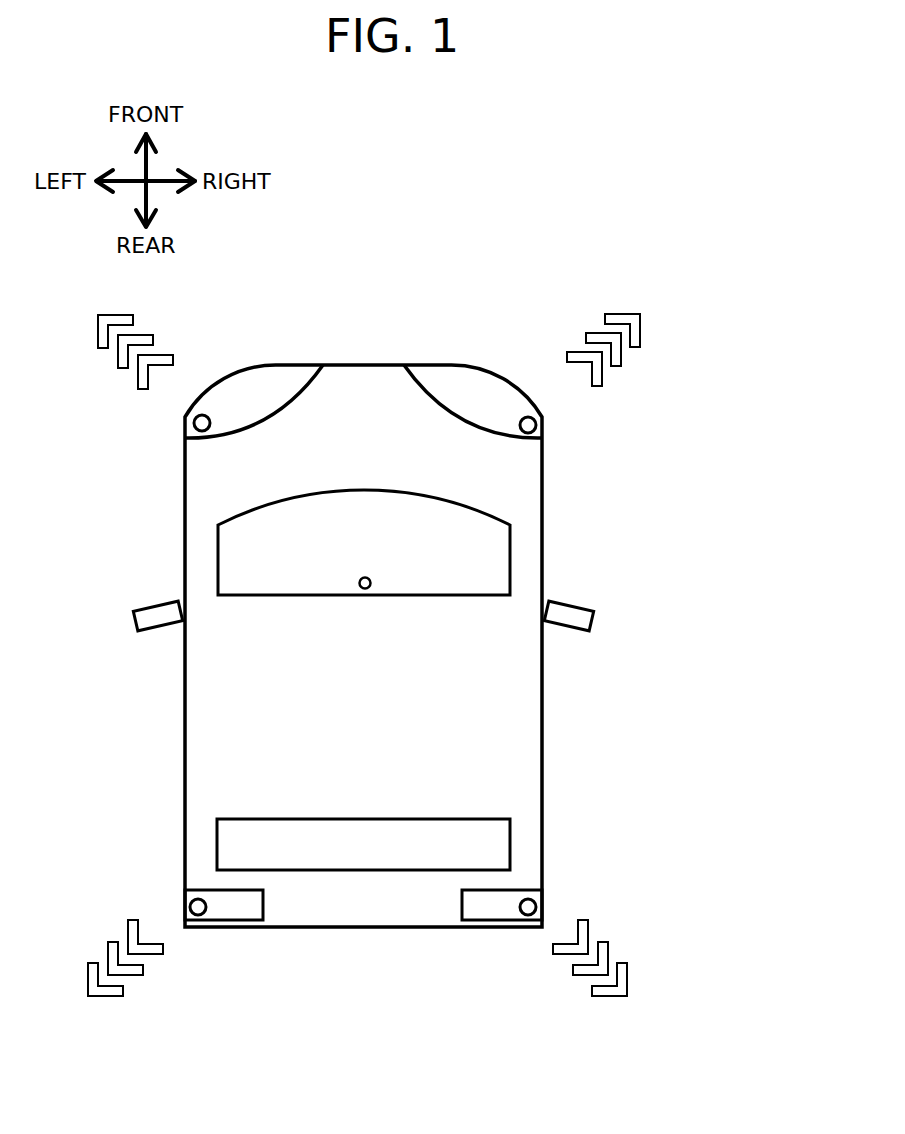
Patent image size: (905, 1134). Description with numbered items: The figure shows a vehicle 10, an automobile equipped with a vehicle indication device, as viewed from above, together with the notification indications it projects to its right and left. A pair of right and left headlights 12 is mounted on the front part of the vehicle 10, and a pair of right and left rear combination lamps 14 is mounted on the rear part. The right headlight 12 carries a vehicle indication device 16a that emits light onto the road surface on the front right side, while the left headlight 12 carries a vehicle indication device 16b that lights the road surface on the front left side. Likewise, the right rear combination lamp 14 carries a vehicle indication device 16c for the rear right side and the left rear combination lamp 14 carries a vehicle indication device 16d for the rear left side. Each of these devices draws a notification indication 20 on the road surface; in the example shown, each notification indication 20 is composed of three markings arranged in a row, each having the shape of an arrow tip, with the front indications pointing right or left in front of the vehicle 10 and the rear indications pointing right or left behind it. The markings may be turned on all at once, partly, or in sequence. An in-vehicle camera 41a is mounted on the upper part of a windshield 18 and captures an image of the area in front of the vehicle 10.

The vehicle 10 is at (383, 261).
The headlight 12 is at (258, 366).
The rear combination lamp 14 is at (243, 920).
The vehicle indication device 16a is at (542, 433).
The vehicle indication device 16b is at (194, 423).
The vehicle indication device 16c is at (536, 897).
The vehicle indication device 16d is at (190, 905).
The windshield 18 is at (217, 552).
The notification indication 20 is at (150, 320).
The in-vehicle camera 41a is at (371, 580).